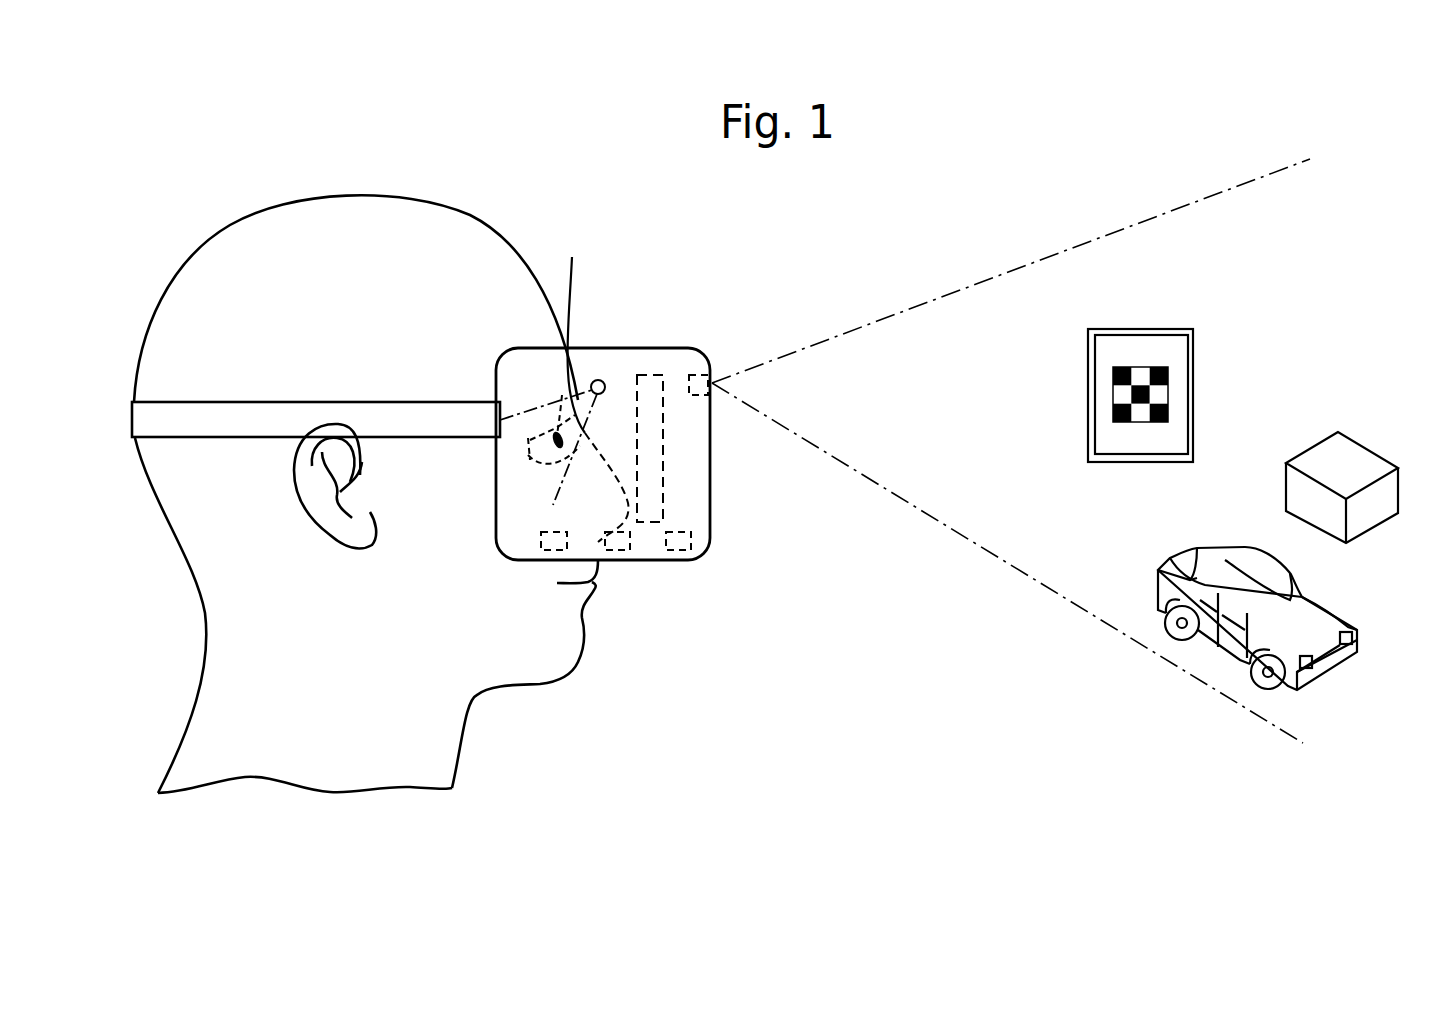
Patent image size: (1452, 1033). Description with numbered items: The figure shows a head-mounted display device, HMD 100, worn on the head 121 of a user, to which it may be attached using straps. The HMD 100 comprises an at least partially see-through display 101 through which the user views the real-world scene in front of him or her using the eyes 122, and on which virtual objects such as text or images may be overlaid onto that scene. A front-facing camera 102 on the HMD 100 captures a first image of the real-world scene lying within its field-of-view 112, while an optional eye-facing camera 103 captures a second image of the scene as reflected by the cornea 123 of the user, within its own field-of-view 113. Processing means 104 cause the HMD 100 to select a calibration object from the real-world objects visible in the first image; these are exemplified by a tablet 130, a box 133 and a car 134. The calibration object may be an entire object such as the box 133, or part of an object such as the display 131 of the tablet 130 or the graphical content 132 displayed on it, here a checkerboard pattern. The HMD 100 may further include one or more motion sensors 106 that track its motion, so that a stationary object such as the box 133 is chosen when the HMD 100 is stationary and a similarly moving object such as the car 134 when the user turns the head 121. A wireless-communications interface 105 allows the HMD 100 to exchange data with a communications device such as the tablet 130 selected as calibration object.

The head-mounted display device 100 is at (686, 320).
The see-through display 101 is at (660, 449).
The front-facing camera 102 is at (708, 375).
The eye-facing camera 103 is at (601, 380).
The processing means 104 is at (542, 552).
The wireless-communications interface 105 is at (623, 552).
The motion sensor 106 is at (693, 558).
The field-of-view of front-facing camera 112 is at (998, 275).
The field-of-view of eye-facing camera 113 is at (589, 383).
The head 121 is at (248, 250).
The eye 122 is at (550, 430).
The cornea 123 is at (563, 395).
The tablet 130 is at (1170, 329).
The display of tablet 131 is at (1180, 437).
The graphical content 132 is at (1168, 383).
The box 133 is at (1367, 458).
The car 134 is at (1320, 612).